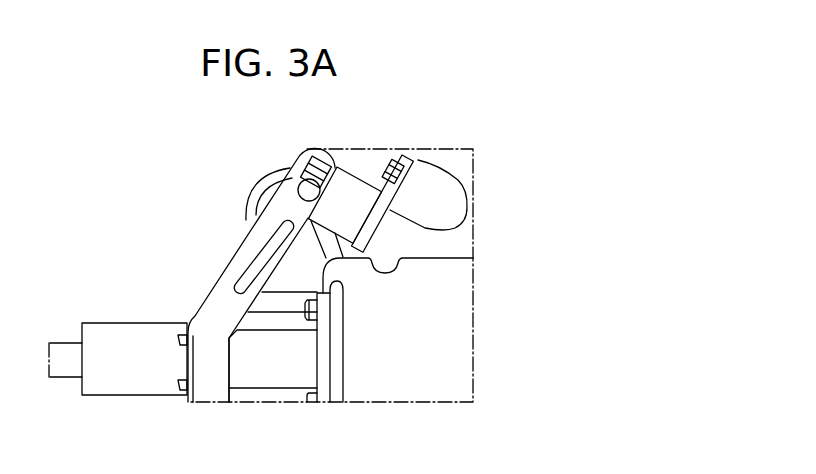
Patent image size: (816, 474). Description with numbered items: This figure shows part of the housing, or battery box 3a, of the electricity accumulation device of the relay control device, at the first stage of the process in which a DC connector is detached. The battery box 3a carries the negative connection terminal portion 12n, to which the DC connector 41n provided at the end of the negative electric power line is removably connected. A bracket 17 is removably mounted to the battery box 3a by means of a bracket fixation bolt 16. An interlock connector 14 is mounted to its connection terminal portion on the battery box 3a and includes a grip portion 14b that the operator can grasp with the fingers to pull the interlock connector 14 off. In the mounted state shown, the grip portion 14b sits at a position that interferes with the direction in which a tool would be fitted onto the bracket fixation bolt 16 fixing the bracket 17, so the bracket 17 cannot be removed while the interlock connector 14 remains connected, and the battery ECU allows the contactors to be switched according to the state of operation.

The housing (battery box) 3a is at (407, 377).
The negative connection terminal portion 12n is at (275, 368).
The interlock connector 14 is at (360, 192).
The grip portion 14b is at (317, 164).
The bracket fixation bolt 16 is at (313, 194).
The bracket 17 is at (226, 307).
The DC connector 41n is at (113, 337).